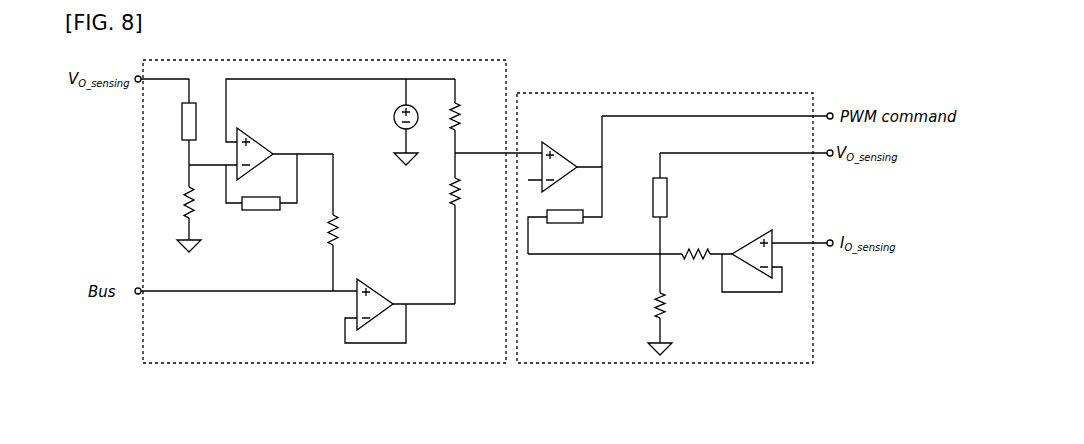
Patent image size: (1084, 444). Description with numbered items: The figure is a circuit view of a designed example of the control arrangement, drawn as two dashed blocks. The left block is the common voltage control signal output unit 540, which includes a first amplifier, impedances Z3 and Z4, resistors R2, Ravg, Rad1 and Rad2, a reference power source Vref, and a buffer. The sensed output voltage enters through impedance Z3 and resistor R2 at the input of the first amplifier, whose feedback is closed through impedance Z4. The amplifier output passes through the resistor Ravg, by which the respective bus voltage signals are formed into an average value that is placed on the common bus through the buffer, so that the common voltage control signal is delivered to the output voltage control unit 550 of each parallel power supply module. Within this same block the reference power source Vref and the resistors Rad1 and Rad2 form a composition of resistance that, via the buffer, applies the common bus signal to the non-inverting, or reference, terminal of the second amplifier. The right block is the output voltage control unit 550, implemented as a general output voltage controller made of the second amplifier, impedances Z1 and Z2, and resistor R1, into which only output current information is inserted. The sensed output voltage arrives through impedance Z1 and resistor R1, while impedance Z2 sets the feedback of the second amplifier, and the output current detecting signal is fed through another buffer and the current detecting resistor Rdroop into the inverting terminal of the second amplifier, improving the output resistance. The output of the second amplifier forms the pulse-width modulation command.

The common voltage control signal output unit 540 is at (342, 241).
The output voltage control unit 550 is at (665, 258).
The impedance Z3 is at (198, 133).
The resistor R2 is at (180, 219).
The impedance Z4 is at (261, 193).
The averaging resistor Ravg is at (351, 222).
The reference power source Vref is at (388, 122).
The resistor Rad1 is at (472, 116).
The resistor Rad2 is at (472, 228).
The impedance Z2 is at (555, 217).
The impedance Z1 is at (649, 223).
The resistor R1 is at (650, 324).
The current detecting resistor Rdroop is at (630, 244).